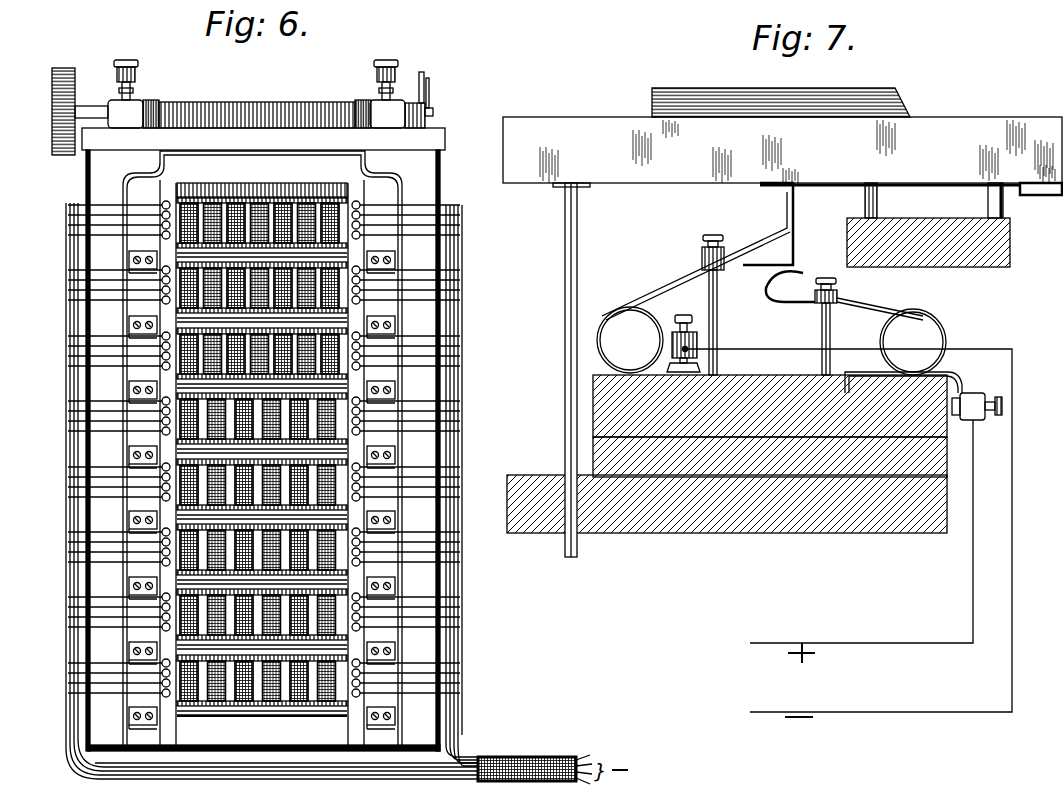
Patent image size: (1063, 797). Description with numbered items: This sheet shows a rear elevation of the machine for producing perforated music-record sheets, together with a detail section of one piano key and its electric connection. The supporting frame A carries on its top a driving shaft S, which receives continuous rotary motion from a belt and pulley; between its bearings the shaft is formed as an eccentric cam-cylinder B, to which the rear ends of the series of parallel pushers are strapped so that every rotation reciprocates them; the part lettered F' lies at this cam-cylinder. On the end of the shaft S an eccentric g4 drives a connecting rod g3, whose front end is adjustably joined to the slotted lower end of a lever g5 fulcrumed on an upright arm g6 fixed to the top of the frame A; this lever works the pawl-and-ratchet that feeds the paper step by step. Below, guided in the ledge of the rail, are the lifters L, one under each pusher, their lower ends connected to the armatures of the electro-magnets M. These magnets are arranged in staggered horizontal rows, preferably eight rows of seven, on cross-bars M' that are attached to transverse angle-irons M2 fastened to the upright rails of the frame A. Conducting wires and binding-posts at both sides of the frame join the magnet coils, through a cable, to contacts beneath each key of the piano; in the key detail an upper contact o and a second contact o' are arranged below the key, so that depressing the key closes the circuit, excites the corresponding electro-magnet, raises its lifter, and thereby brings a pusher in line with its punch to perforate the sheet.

In FIG. 6, the supporting frame A is at (478, 325).
In FIG. 6, the driving shaft S is at (108, 108).
In FIG. 6, the coil end (spring) F' is at (201, 101).
In FIG. 6, the eccentric cam-cylinder B is at (298, 107).
In FIG. 6, the connecting rod g3 is at (433, 100).
In FIG. 6, the eccentric g4 is at (433, 108).
In FIG. 6, the lever g5 is at (437, 84).
In FIG. 6, the upright arm g6 is at (419, 75).
In FIG. 6, the lifters L is at (262, 189).
In FIG. 6, the electro-magnets M is at (260, 456).
In FIG. 6, the cross-bars M' is at (219, 729).
In FIG. 6, the transverse angle-irons M2 is at (313, 706).
In FIG. 7, the upper contact o is at (708, 251).
In FIG. 7, the lower contact o' is at (790, 301).